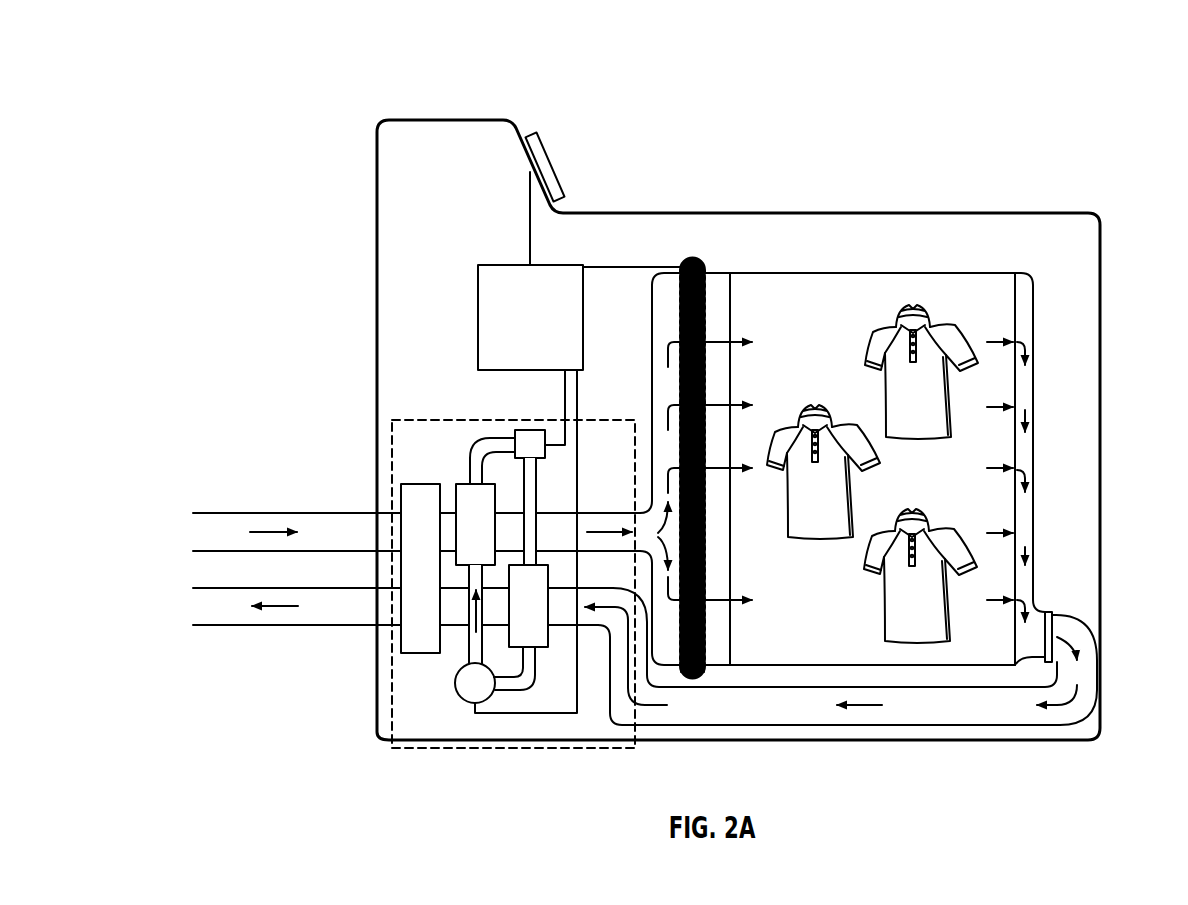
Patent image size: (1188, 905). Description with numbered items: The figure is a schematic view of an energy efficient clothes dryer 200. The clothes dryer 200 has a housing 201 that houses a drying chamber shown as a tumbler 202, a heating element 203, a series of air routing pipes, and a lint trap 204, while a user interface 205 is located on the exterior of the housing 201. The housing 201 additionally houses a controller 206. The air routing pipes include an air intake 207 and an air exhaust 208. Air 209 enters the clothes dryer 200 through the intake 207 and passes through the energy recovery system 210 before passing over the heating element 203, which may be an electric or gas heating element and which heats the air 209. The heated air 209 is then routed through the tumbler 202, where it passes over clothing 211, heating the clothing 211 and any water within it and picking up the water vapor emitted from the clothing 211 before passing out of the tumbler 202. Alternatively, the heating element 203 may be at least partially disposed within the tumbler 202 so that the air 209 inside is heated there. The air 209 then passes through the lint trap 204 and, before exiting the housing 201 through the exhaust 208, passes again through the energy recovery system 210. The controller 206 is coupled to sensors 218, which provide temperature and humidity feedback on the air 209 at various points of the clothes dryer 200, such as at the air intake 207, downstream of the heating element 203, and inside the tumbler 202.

The clothes dryer 200 is at (358, 82).
The housing 201 is at (1055, 212).
The tumbler 202 is at (872, 272).
The heating element 203 is at (692, 267).
The lint trap 204 is at (1050, 610).
The user interface 205 is at (557, 168).
The controller 206 is at (500, 265).
The air intake 207 is at (213, 512).
The air exhaust 208 is at (213, 587).
The air 209 is at (275, 531).
The energy recovery system 210 is at (500, 748).
The clothing 211 is at (837, 503).
The sensors 218 is at (716, 290).